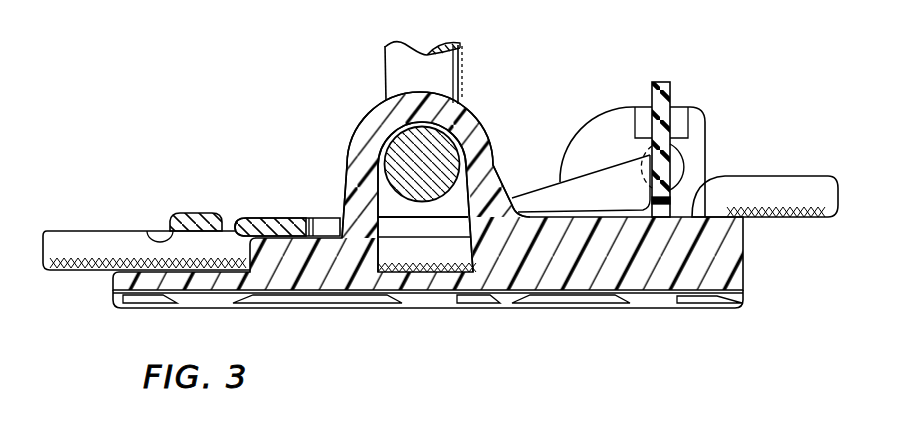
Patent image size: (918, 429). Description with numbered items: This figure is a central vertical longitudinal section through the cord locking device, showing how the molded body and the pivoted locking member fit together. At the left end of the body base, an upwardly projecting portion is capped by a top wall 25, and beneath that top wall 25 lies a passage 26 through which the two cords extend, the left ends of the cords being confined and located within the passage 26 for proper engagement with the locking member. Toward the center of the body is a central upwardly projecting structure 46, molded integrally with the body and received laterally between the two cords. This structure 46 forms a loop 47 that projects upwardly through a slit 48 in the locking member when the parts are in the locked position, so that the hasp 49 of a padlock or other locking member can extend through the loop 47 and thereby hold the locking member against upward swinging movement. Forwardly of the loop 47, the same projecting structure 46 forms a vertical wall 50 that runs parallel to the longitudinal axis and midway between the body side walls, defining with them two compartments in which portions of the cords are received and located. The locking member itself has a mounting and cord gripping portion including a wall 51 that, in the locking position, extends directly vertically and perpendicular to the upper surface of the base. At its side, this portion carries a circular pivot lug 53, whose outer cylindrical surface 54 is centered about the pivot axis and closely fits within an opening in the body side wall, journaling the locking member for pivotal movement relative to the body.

The top wall 25 is at (193, 213).
The passage 26 is at (149, 230).
The central upwardly projecting structure 46 is at (393, 157).
The loop 47 is at (475, 122).
The slit 48 is at (325, 217).
The hasp 49 is at (443, 164).
The vertical wall 50 is at (562, 272).
The wall 51 is at (663, 127).
The pivot lug 53 is at (698, 160).
The outer cylindrical surface 54 is at (677, 167).